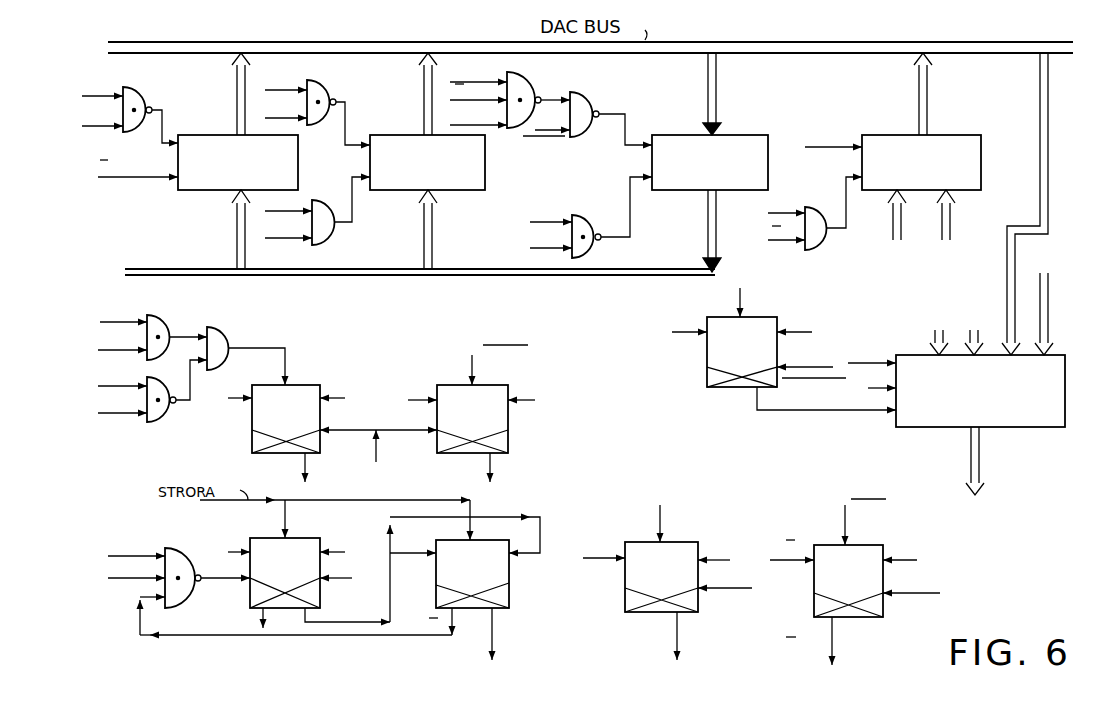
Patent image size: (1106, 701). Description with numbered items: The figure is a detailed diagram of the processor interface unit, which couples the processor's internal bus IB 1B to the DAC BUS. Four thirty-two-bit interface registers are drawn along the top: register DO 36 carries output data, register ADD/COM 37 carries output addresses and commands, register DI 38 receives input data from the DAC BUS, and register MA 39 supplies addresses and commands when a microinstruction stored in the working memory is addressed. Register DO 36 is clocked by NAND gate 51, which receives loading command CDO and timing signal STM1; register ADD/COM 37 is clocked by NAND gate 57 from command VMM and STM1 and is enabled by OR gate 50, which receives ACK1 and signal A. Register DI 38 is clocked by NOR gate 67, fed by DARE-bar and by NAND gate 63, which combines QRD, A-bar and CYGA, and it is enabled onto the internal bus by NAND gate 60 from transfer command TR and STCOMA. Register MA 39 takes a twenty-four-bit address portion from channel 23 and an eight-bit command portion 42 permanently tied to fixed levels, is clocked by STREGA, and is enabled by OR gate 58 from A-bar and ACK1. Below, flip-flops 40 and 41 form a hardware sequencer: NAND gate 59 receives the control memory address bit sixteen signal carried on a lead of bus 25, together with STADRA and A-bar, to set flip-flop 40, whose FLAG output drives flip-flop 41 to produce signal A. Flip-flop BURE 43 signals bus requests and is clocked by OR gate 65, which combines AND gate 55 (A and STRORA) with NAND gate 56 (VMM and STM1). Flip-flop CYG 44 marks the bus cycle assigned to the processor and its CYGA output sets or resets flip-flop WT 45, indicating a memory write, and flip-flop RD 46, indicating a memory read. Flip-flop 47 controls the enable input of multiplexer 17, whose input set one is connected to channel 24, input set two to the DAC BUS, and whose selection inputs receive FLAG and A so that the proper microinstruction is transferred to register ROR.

The internal bus 1B is at (474, 277).
The multiplexer 17 is at (1037, 427).
The channel 23 is at (950, 222).
The channel 24 is at (1050, 292).
The bus 25 is at (1050, 166).
The register DO 36 is at (209, 135).
The register ADD/COM 37 is at (438, 190).
The register DI 38 is at (738, 135).
The register MA 39 is at (985, 158).
The flip-flop 40 is at (248, 602).
The flip-flop 41 is at (509, 595).
The input portion 42 is at (901, 232).
The flip-flop BURE 43 is at (310, 385).
The flip-flop CYG 44 is at (508, 438).
The flip-flop WT 45 is at (883, 548).
The flip-flop RD 46 is at (698, 546).
The flip-flop 47 is at (707, 356).
The OR gate 50 is at (345, 236).
The NAND gate 51 is at (143, 90).
The AND gate 55 is at (157, 316).
The NAND gate 56 is at (170, 420).
The NAND gate 57 is at (330, 86).
The OR gate 58 is at (824, 248).
The NAND gate 59 is at (176, 548).
The NAND gate 60 is at (584, 216).
The NAND gate 63 is at (530, 82).
The OR gate 65 is at (229, 332).
The NOR gate 67 is at (592, 96).